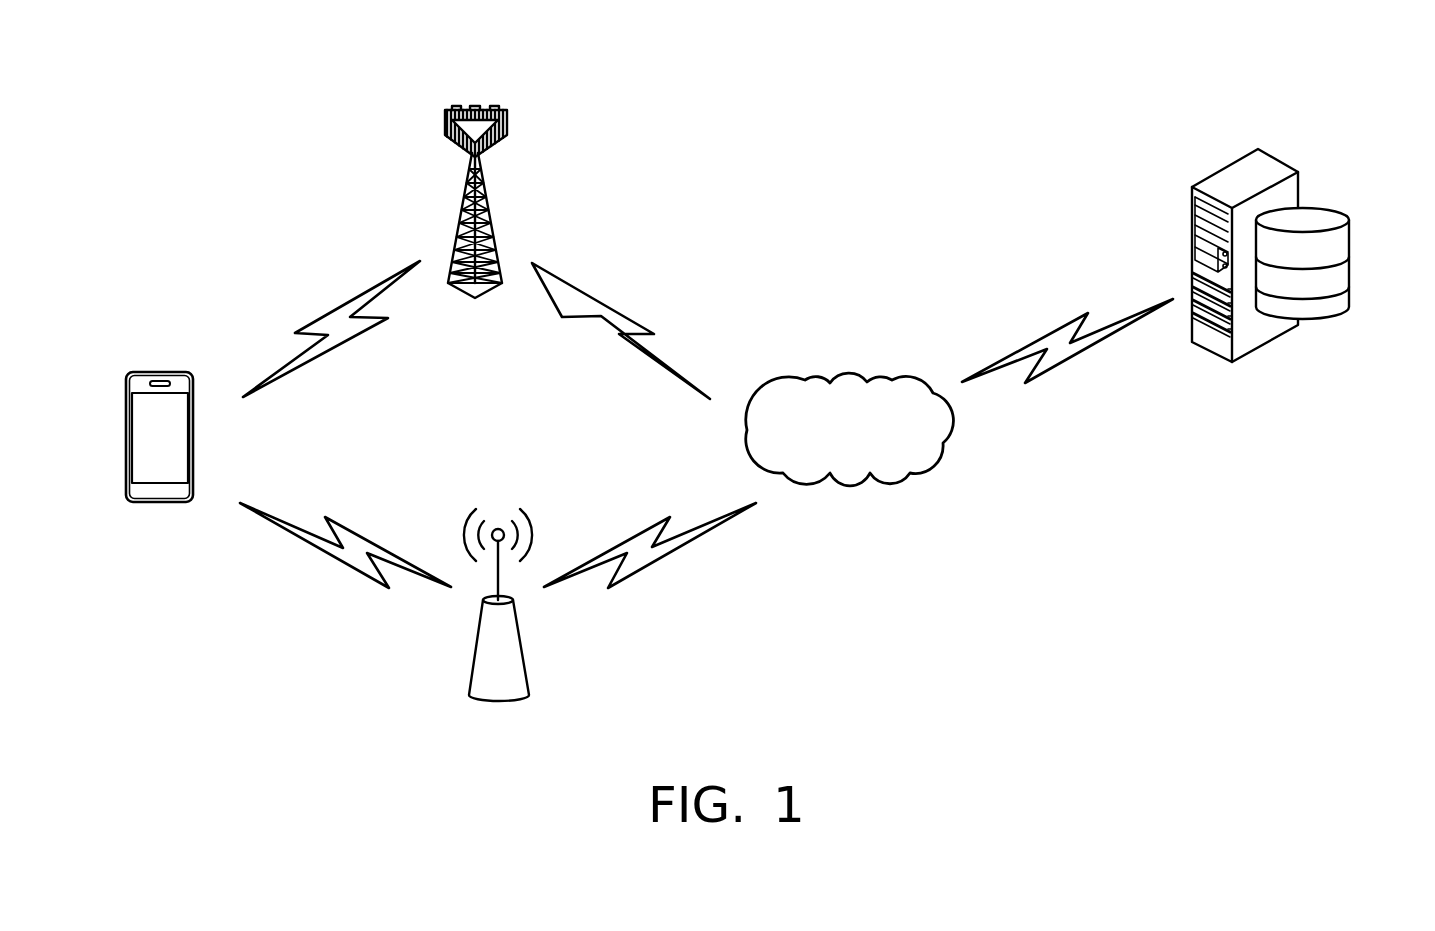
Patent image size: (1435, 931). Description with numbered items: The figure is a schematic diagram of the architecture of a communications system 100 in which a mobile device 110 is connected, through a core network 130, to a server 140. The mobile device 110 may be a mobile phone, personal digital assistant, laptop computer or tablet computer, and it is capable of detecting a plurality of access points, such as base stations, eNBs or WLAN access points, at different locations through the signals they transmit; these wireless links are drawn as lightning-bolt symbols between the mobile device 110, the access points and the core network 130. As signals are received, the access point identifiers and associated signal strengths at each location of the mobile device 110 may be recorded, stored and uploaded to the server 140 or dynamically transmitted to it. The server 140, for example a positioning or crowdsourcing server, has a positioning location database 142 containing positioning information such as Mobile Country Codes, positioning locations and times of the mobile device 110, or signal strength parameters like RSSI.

The communications system 100 is at (892, 114).
The mobile device 110 is at (160, 372).
The core network 130 is at (849, 373).
The server 140 is at (1242, 180).
The positioning location database 142 is at (1330, 225).